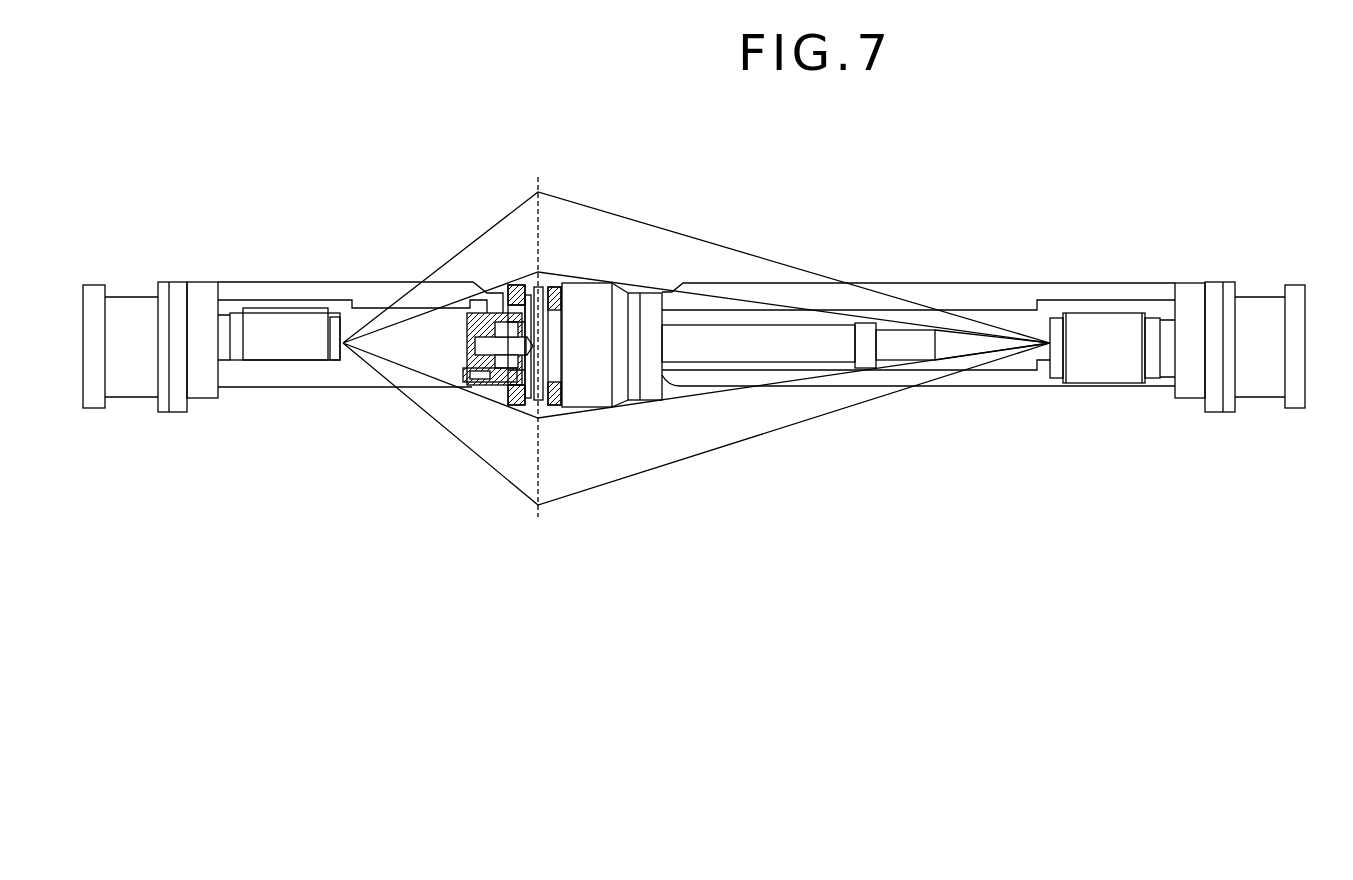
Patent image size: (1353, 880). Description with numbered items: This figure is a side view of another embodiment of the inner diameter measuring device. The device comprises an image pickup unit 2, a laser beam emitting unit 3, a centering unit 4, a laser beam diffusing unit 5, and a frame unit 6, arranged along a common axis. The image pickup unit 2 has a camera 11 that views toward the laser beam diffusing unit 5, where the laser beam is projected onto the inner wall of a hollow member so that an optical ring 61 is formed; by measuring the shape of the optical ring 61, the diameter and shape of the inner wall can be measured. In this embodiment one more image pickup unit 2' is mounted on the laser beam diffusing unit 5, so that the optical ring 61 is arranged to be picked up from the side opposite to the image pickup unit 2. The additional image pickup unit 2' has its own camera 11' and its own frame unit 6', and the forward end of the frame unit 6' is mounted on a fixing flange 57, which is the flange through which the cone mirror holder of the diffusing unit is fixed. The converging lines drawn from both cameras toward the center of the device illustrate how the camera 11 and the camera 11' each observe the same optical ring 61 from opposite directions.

The image pickup unit 2' is at (150, 289).
The camera 11' is at (269, 271).
The frame unit 6' is at (360, 286).
The laser beam diffusing unit 5 is at (505, 277).
The centering unit 4 is at (607, 282).
The laser beam emitting unit 3 is at (790, 322).
The frame unit 6 is at (918, 279).
The camera 11 is at (1112, 277).
The image pickup unit 2 is at (1240, 292).
The fixing flange 57 is at (489, 380).
The optical ring 61 is at (537, 486).